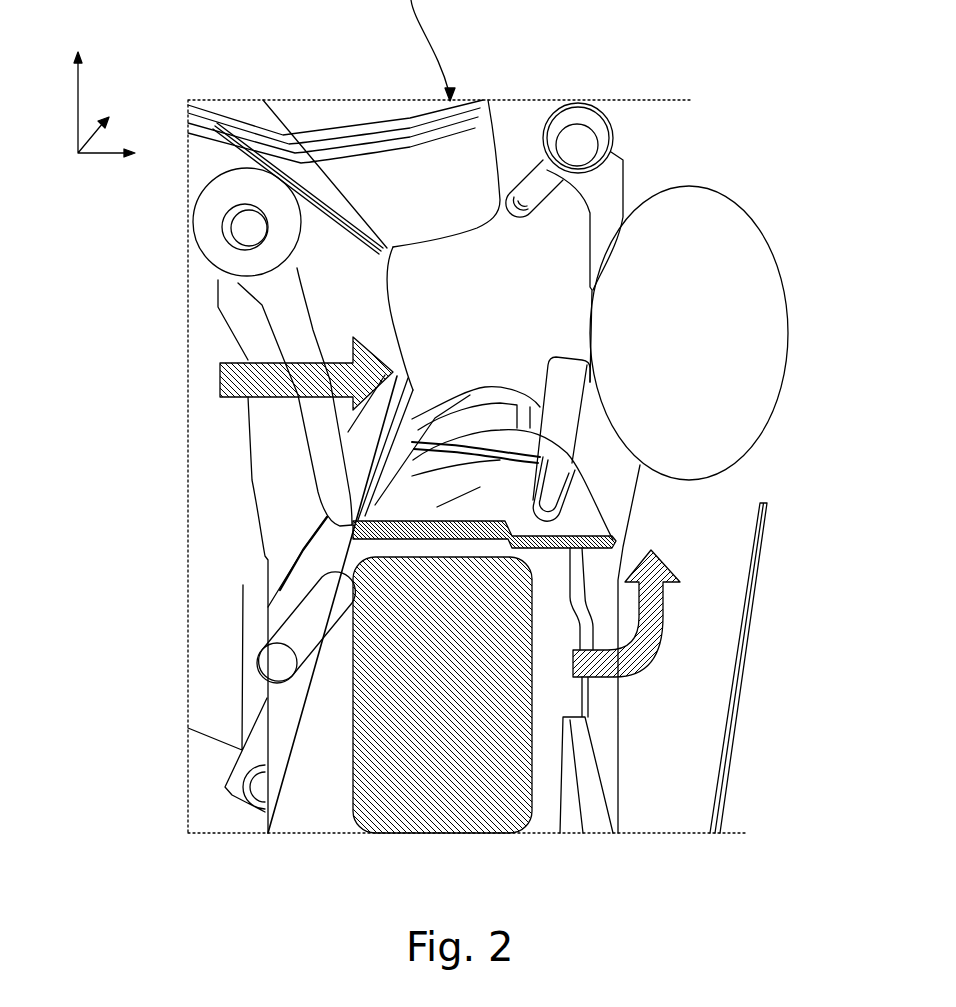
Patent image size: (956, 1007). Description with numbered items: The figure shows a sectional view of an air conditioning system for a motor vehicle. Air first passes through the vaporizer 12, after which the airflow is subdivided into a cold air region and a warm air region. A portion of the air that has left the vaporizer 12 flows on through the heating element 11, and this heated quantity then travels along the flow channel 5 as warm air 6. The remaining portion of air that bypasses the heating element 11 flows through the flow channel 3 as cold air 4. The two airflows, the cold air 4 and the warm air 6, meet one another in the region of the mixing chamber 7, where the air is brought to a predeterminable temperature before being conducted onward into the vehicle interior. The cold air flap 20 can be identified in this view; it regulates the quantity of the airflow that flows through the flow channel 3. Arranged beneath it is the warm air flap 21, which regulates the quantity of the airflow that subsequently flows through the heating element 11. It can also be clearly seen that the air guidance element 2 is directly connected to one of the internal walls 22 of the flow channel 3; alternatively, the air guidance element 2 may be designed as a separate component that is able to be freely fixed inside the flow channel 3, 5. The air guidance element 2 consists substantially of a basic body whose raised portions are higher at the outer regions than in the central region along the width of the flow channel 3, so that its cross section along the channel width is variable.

The air guidance element 2 is at (357, 489).
The flow channel 3 is at (460, 273).
The cold air 4 is at (218, 367).
The flow channel 5 is at (717, 573).
The warm air 6 is at (640, 644).
The mixing chamber 7 is at (732, 257).
The heating element 11 is at (397, 807).
The vaporizer 12 is at (218, 477).
The cold air flap 20 is at (333, 293).
The warm air flap 21 is at (277, 563).
The internal wall 22 is at (627, 543).